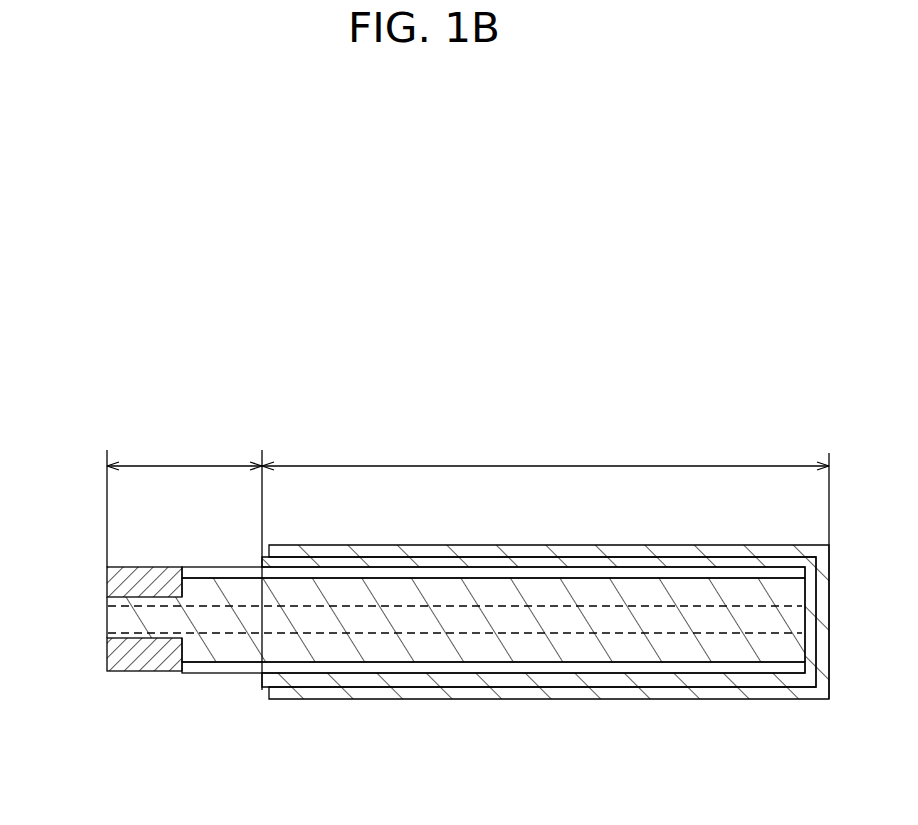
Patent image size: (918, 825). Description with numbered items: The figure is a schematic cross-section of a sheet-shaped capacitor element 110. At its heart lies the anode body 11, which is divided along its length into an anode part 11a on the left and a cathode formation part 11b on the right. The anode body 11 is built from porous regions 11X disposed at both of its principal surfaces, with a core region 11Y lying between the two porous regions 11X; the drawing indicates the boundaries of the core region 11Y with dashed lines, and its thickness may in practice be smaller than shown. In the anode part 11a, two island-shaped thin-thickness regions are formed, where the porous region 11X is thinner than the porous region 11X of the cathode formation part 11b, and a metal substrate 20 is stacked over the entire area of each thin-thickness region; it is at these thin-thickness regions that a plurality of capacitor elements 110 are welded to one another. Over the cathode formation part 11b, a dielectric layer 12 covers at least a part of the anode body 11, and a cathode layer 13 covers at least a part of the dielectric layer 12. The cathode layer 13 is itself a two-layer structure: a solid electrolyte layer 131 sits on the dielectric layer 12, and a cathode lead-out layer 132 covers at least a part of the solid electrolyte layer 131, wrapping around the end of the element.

The capacitor element 110 is at (515, 296).
The anode part 11a is at (184, 563).
The cathode formation part 11b is at (545, 568).
The anode body 11 is at (42, 585).
The porous region 11X is at (108, 604).
The core region 11Y is at (108, 621).
The metal substrate 20 is at (128, 578).
The dielectric layer 12 is at (213, 674).
The cathode layer 13 is at (316, 763).
The solid electrolyte layer 131 is at (263, 687).
The cathode lead-out layer 132 is at (308, 700).